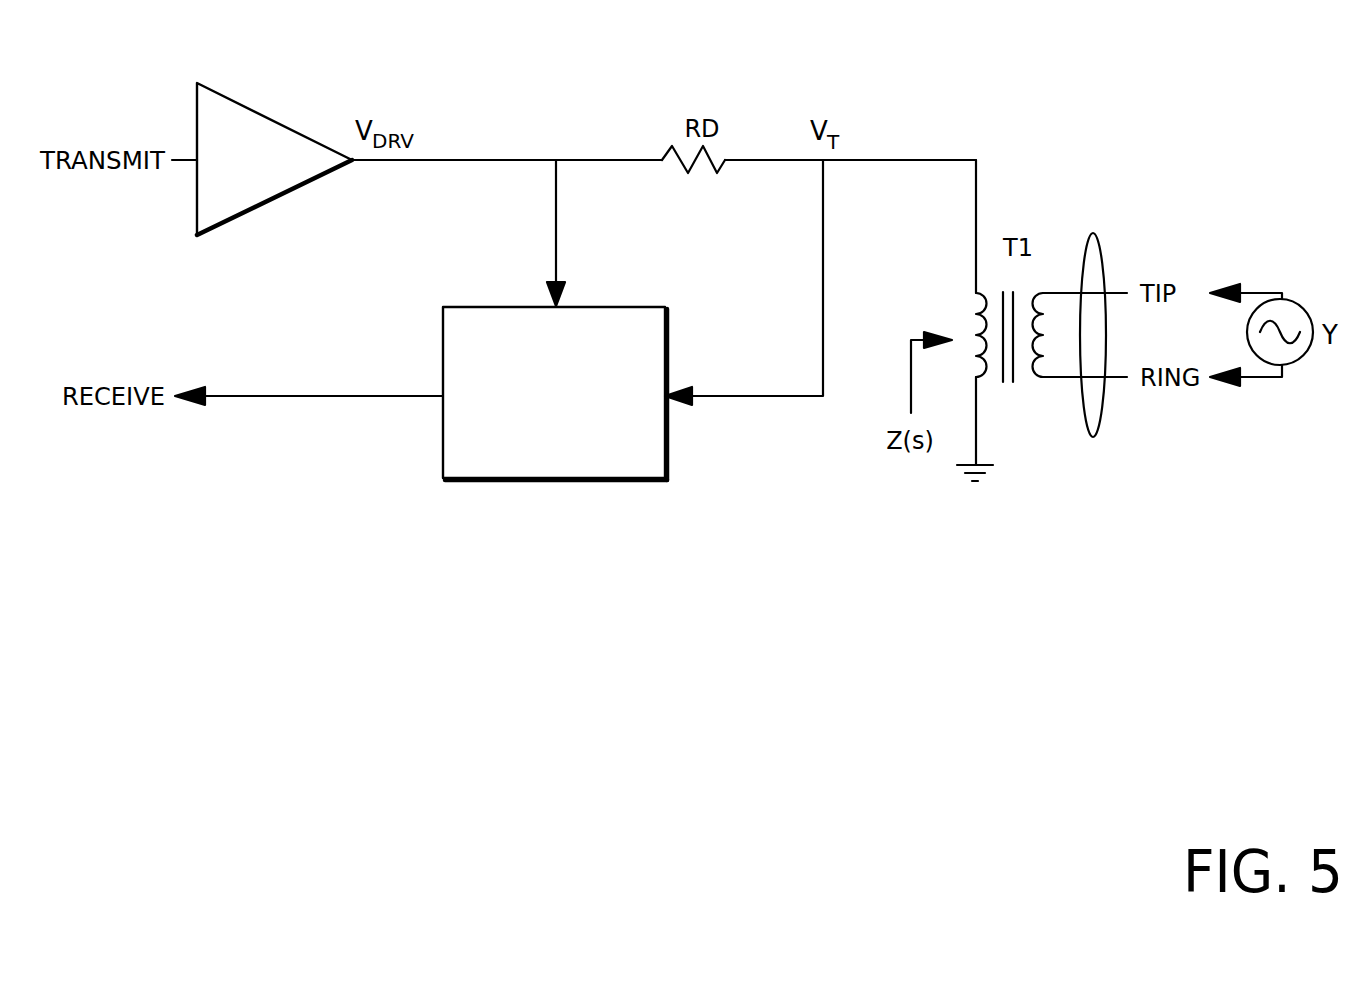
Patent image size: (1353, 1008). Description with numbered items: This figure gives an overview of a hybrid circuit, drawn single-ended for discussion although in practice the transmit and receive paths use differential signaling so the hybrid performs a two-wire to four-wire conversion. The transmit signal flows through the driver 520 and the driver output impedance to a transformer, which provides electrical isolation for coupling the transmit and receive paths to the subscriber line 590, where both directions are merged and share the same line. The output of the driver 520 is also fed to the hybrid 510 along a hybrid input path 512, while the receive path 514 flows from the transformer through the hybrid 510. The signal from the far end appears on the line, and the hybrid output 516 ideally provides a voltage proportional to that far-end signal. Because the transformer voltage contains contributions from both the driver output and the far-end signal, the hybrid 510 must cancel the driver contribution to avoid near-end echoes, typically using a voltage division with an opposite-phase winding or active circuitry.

The hybrid 510 is at (495, 480).
The hybrid input path 512 is at (556, 229).
The receive path 514 is at (823, 229).
The hybrid output 516 is at (313, 397).
The driver 520 is at (229, 95).
The subscriber line 590 is at (1094, 234).